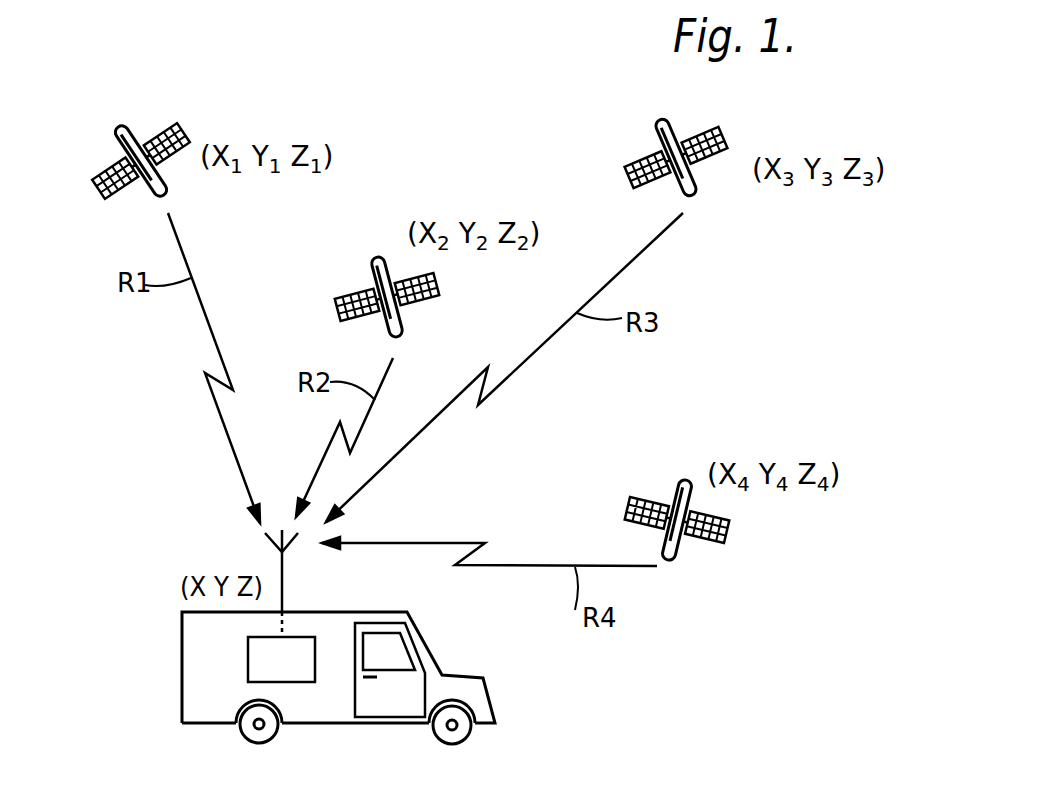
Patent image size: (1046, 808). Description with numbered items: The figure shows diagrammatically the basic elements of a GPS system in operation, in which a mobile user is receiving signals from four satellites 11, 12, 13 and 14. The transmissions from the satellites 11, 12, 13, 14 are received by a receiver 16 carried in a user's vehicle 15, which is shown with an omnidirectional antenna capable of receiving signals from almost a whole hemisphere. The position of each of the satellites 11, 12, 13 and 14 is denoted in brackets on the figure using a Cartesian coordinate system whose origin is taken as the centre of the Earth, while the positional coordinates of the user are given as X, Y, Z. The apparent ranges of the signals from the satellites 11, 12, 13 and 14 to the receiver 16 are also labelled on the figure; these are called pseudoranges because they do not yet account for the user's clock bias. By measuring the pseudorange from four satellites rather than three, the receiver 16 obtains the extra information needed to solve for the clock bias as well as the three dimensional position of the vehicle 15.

The satellite 11 is at (118, 130).
The satellite 12 is at (378, 256).
The satellite 13 is at (658, 130).
The satellite 14 is at (683, 478).
The user's vehicle 15 is at (486, 704).
The receiver 16 is at (248, 660).